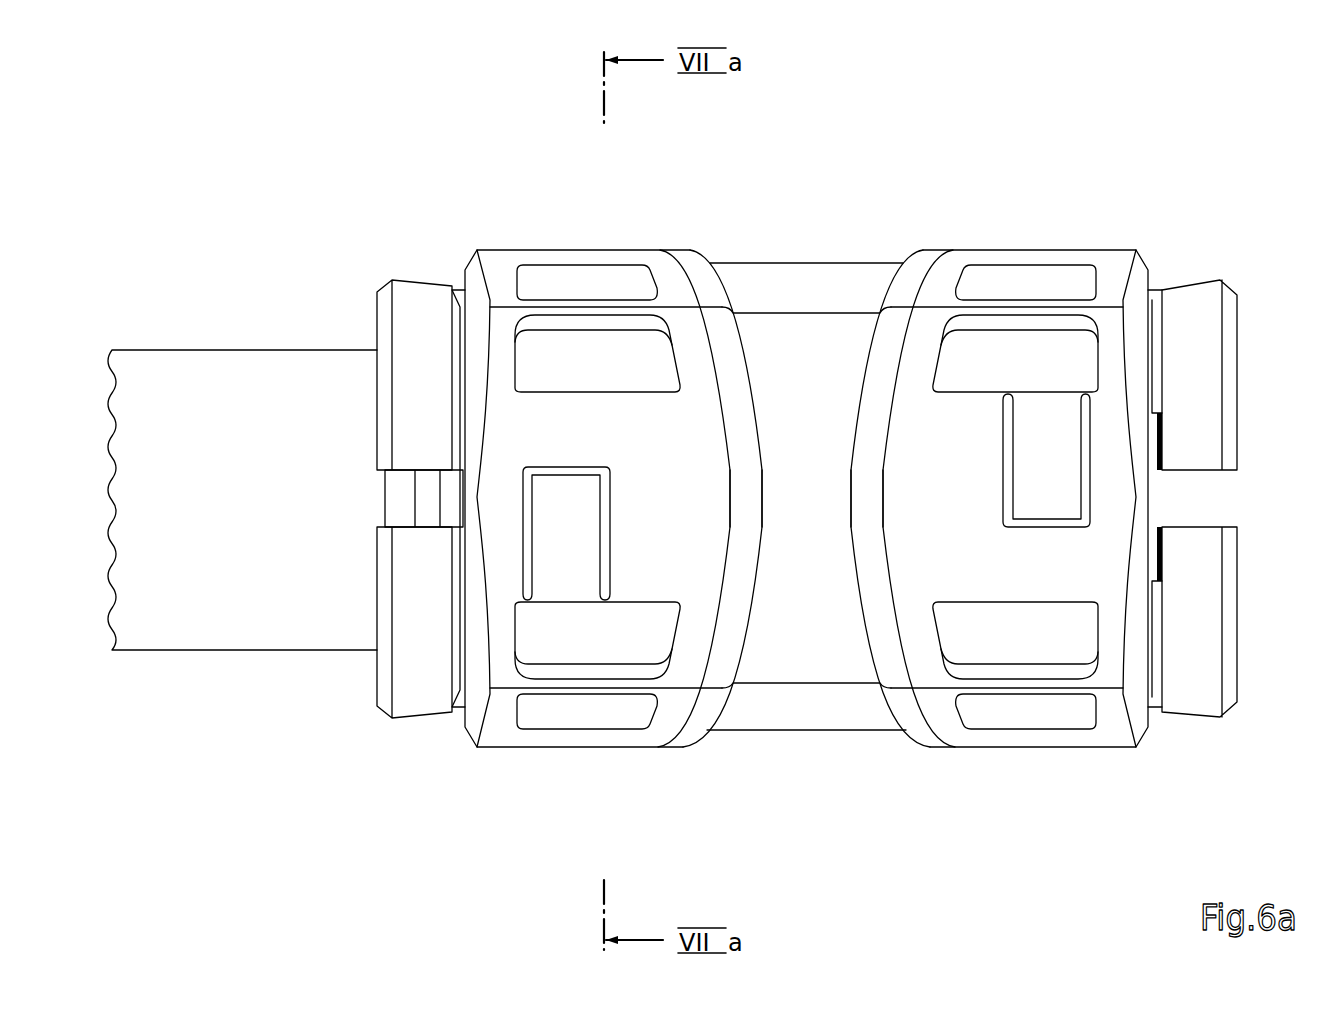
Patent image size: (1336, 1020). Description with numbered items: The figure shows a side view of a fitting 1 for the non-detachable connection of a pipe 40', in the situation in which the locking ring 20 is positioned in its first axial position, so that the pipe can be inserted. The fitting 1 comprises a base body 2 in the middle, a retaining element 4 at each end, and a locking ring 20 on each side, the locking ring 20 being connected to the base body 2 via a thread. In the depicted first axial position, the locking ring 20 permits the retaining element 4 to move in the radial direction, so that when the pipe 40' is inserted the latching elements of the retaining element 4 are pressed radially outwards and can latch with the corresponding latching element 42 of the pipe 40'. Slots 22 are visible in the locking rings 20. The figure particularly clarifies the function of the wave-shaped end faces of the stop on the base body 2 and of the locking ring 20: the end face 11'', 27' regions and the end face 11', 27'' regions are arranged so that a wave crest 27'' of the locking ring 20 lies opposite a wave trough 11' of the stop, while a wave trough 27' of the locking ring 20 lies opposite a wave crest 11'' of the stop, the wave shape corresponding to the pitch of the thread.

The fitting 1 is at (1065, 177).
The base body 2 is at (810, 295).
The retaining element 4 is at (416, 300).
The locking ring 20 is at (503, 268).
The latching slot 22 is at (577, 530).
The pipe 40' is at (242, 459).
The latching element of the pipe 42 is at (450, 500).
The wave crest of the stop 11'' is at (810, 499).
The wave trough of the locking ring 27' is at (810, 499).
The wave trough of the stop 11' is at (806, 537).
The wave crest of the locking ring 27'' is at (806, 537).